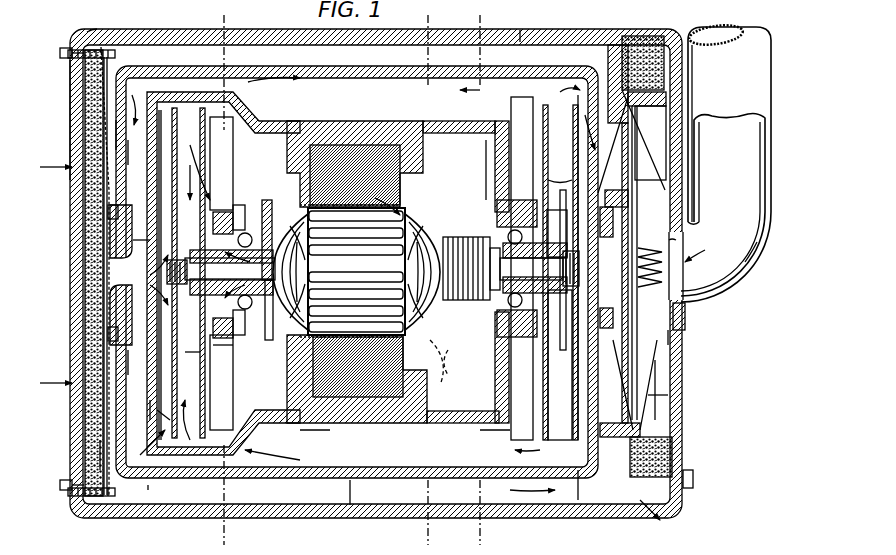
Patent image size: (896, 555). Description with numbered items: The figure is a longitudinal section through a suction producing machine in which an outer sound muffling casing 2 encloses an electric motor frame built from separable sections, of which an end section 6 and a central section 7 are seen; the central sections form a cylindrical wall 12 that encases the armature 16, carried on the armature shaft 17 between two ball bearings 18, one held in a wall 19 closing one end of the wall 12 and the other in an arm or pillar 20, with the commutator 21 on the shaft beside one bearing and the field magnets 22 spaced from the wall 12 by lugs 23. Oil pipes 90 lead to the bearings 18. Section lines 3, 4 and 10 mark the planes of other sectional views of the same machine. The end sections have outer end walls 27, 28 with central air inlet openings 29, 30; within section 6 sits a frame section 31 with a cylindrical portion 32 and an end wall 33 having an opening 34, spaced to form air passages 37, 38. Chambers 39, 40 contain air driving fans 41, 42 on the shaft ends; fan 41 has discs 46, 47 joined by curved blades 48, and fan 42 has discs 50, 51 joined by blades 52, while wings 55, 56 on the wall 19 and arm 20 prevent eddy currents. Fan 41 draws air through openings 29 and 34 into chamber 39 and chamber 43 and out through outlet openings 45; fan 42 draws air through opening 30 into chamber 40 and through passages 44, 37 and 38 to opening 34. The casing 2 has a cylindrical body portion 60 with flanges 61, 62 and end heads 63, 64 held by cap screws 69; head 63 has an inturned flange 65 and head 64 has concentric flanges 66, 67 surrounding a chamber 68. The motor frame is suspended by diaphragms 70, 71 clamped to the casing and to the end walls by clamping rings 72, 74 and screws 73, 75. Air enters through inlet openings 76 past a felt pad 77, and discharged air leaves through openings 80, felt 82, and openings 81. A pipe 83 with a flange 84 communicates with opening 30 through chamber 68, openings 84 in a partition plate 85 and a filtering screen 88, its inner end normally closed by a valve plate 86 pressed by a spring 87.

The outer sound muffling casing 2 is at (138, 34).
The section line 3 is at (402, 536).
The section line 4 is at (247, 12).
The end section of motor frame 6 is at (150, 483).
The central section of motor frame 7 is at (350, 505).
The section line 10 is at (507, 14).
The central cylindrical wall 12 is at (302, 424).
The armature 16 is at (356, 271).
The armature shaft 17 is at (483, 244).
The ball bearing 18 is at (292, 232).
The wall 19 is at (459, 370).
The arm or pillar 20 is at (268, 370).
The commutator 21 is at (466, 300).
The field magnet 22 is at (402, 184).
The lug 23 is at (350, 121).
The outer end wall 27 is at (122, 134).
The outer end wall 28 is at (660, 398).
The air inlet opening 29 is at (120, 281).
The air inlet opening 30 is at (686, 321).
The frame section 31 is at (165, 419).
The cylindrical portion 32 is at (190, 462).
The outer end wall 33 is at (100, 199).
The air inlet opening 34 is at (152, 297).
The air passage 37 is at (175, 84).
The air passage 38 is at (138, 154).
The chamber 39 is at (110, 457).
The chamber 40 is at (578, 500).
The air driving fan 41 is at (155, 410).
The air driving fan 42 is at (645, 419).
The chamber 43 is at (325, 121).
The air passage 44 is at (287, 80).
The air outlet opening 45 is at (463, 364).
The outer disc 46 is at (194, 360).
The disc 47 is at (226, 358).
The curved blade 48 is at (196, 275).
The outer disc 50 is at (539, 275).
The disc 51 is at (563, 365).
The curved blade 52 is at (560, 272).
The wing or blade 55 is at (188, 273).
The wing or blade 56 is at (560, 183).
The cylindrical body portion 60 is at (525, 30).
The flange 61 is at (118, 58).
The flange 62 is at (595, 73).
The end head 63 is at (70, 77).
The end head 64 is at (690, 76).
The inturned flange 65 is at (90, 31).
The annular flange 66 is at (650, 33).
The annular flange 67 is at (647, 136).
The chamber 68 is at (660, 384).
The cap screw 69 is at (58, 54).
The diaphragm 70 is at (100, 116).
The diaphragm 71 is at (690, 339).
The clamping ring 72 is at (122, 339).
The screw 73 is at (115, 211).
The clamping ring 74 is at (614, 332).
The screw 75 is at (646, 263).
The air inlet opening 76 is at (41, 284).
The felt pad 77 is at (128, 254).
The opening 80 is at (557, 122).
The opening 81 is at (630, 34).
The soft felt 82 is at (665, 453).
The pipe 83 is at (748, 252).
The flange / openings 84 is at (722, 361).
The partition plate 85 is at (630, 226).
The valve plate 86 is at (672, 242).
The spring 87 is at (665, 284).
The filtering screen 88 is at (640, 144).
The oil pipe 90 is at (485, 158).